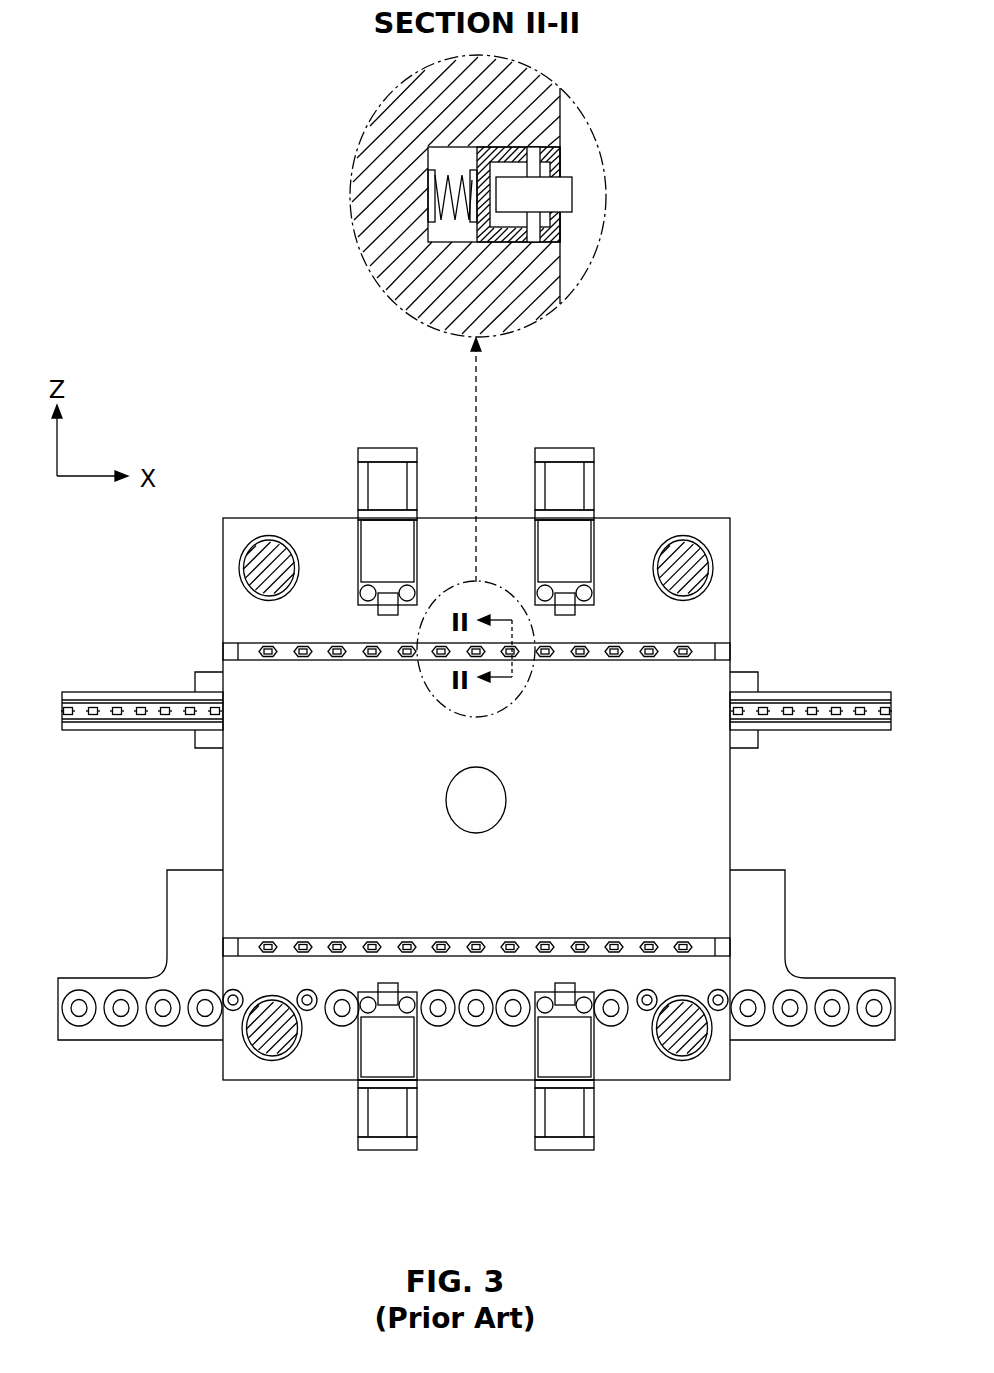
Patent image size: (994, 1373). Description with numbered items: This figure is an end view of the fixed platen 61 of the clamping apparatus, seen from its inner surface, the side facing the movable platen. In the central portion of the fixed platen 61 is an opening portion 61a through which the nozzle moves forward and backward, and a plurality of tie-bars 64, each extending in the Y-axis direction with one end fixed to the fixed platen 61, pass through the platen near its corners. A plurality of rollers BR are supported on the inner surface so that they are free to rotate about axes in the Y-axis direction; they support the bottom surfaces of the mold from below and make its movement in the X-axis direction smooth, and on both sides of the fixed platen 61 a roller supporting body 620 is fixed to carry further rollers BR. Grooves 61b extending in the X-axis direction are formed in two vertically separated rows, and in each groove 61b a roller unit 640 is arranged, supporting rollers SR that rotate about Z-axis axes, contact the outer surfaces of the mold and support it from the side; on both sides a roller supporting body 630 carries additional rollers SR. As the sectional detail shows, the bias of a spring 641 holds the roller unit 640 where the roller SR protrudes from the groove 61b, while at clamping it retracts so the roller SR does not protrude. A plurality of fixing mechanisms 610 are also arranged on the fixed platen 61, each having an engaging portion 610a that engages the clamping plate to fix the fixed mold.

The fixed platen 61 is at (754, 499).
The opening portion 61a is at (506, 800).
The grooves 61b is at (723, 652).
The tie-bars 64 is at (265, 548).
The fixing mechanism 610 is at (389, 448).
The engaging portion 610a is at (388, 616).
The roller supporting body 620 is at (98, 978).
The roller supporting body 630 is at (129, 692).
The roller unit 640 is at (561, 162).
The spring 641 is at (437, 195).
The rollers SR is at (573, 195).
The rollers BR is at (305, 990).